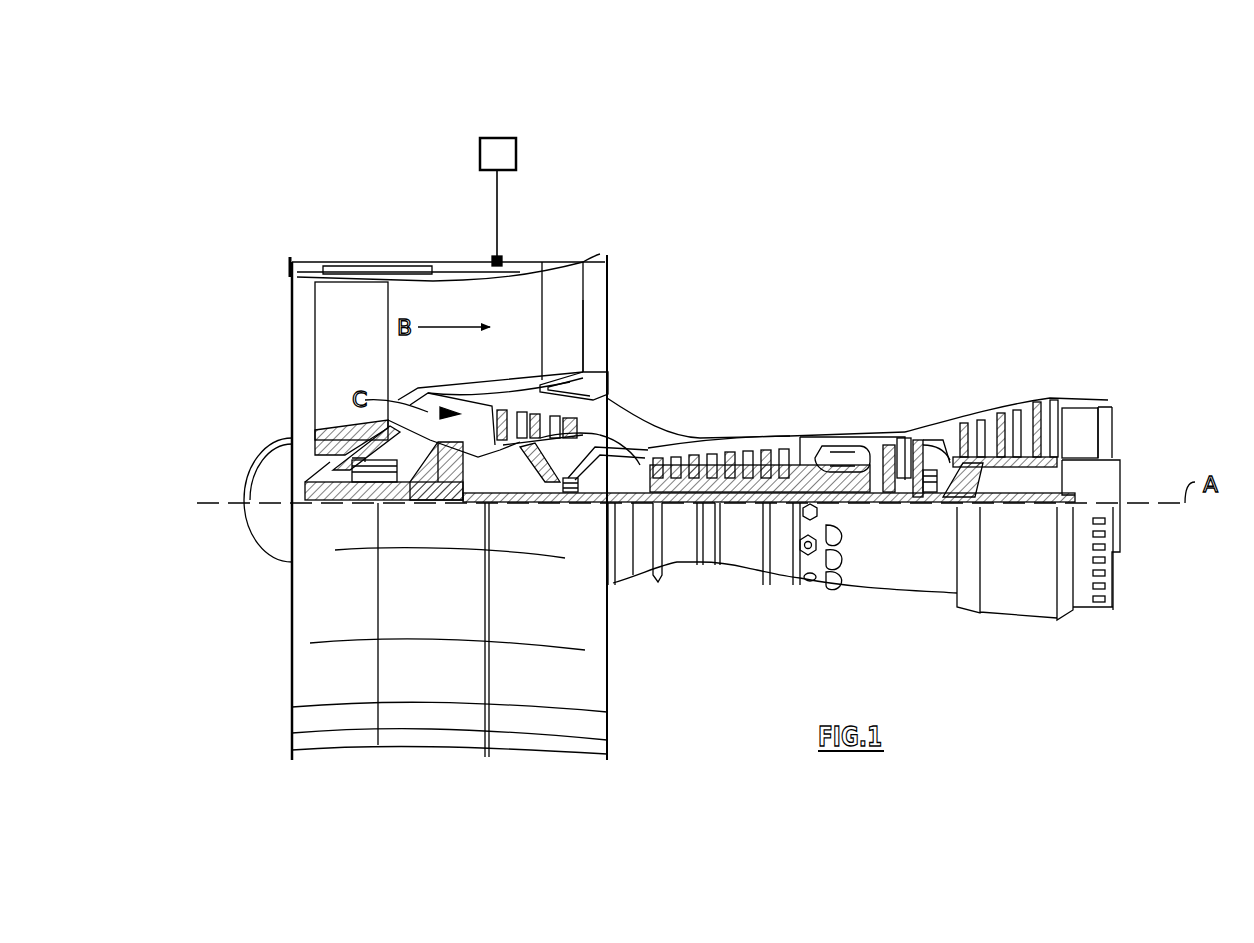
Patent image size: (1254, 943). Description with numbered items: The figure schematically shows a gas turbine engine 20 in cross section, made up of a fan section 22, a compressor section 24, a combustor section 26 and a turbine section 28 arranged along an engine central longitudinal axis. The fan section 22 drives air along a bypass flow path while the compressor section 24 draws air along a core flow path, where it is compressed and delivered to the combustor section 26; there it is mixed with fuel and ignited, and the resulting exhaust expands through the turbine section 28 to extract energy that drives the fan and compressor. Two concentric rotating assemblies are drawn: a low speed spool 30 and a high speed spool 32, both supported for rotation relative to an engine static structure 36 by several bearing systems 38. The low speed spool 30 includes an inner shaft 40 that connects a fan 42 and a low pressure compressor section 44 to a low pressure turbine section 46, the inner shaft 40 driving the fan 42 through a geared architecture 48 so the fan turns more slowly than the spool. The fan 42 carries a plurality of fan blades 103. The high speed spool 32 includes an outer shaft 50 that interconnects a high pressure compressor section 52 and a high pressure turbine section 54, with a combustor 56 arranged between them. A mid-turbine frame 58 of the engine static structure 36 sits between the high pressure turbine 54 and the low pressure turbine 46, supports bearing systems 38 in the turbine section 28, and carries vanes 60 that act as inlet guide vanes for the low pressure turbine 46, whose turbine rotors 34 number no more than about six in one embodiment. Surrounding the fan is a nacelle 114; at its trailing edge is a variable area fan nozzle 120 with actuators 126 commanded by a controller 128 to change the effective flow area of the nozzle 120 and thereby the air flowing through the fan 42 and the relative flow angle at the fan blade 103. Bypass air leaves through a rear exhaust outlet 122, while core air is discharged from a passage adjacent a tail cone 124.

The gas turbine engine 20 is at (852, 306).
The fan section 22 is at (386, 252).
The compressor section 24 is at (652, 424).
The combustor section 26 is at (845, 414).
The turbine section 28 is at (970, 386).
The low speed spool 30 is at (746, 512).
The high speed spool 32 is at (782, 445).
The turbine rotors 34 is at (1062, 478).
The engine static structure 36 is at (780, 584).
The bearing systems 38 is at (385, 498).
The inner shaft 40 is at (630, 520).
The fan 42 is at (365, 368).
The low pressure compressor section 44 is at (563, 388).
The low pressure turbine section 46 is at (1010, 400).
The geared architecture 48 is at (458, 500).
The outer shaft 50 is at (852, 492).
The high pressure compressor section 52 is at (735, 445).
The high pressure turbine section 54 is at (903, 438).
The combustor 56 is at (845, 450).
The mid-turbine frame 58 is at (938, 428).
The vanes 60 is at (937, 450).
The fan blades 103 is at (332, 323).
The nacelle 114 is at (410, 262).
The nozzle 120 is at (598, 262).
The rear exhaust outlet 122 is at (598, 310).
The tail cone 124 is at (1118, 455).
The actuators 126 is at (500, 262).
The controller 128 is at (505, 140).